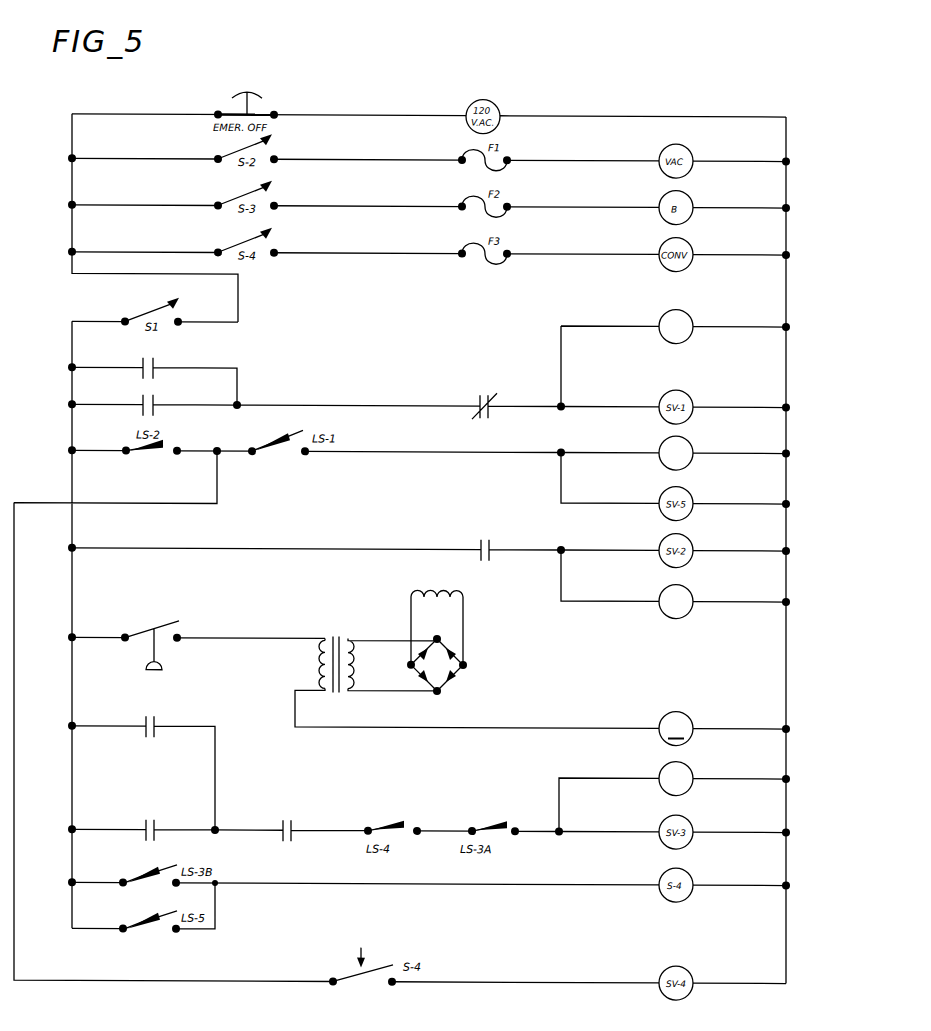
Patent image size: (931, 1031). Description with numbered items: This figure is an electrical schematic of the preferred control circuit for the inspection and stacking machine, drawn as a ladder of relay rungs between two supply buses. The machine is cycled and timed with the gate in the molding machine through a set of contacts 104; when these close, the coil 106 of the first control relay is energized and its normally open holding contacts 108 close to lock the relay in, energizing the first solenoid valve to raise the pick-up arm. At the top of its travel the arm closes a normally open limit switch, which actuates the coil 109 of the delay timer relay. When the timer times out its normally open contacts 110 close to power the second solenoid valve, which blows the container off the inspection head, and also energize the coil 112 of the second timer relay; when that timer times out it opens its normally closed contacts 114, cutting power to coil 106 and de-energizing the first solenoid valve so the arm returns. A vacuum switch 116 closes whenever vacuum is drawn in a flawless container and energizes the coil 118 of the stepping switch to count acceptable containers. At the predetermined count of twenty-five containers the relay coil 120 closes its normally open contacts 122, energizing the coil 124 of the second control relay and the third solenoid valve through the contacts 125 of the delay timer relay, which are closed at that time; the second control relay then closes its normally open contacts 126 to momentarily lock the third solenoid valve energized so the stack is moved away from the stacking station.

The set of contacts 104 is at (143, 397).
The coil of control relay CR-1 106 is at (689, 314).
The normally open holding contacts 108 is at (143, 360).
The coil of delay timer relay TR-1 109 is at (689, 440).
The normally open contacts of timer relay TR-1 110 is at (478, 538).
The coil of second timer relay TR-2 112 is at (688, 612).
The normally closed contacts of timer relay TR-2 114 is at (480, 400).
The vacuum switch 116 is at (166, 628).
The coil of stepping switch S-25 118 is at (414, 593).
The relay coil 120 is at (686, 714).
The normally open contacts 122 is at (146, 819).
The coil of control relay CR-2 124 is at (689, 766).
The contacts of timer relay TR-1 125 is at (281, 819).
The normally open contacts of control relay CR-2 126 is at (144, 718).